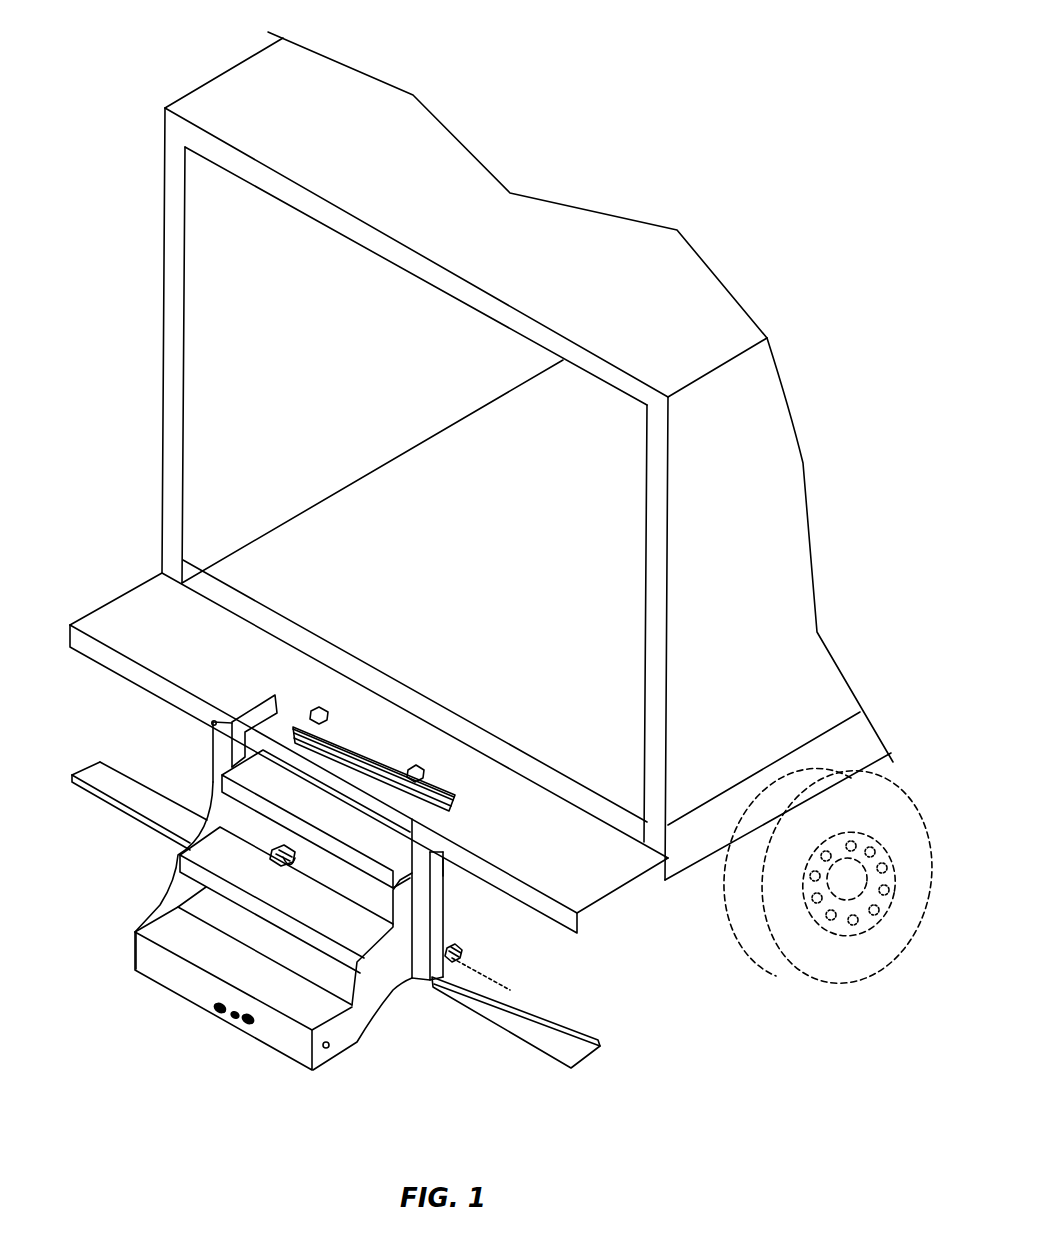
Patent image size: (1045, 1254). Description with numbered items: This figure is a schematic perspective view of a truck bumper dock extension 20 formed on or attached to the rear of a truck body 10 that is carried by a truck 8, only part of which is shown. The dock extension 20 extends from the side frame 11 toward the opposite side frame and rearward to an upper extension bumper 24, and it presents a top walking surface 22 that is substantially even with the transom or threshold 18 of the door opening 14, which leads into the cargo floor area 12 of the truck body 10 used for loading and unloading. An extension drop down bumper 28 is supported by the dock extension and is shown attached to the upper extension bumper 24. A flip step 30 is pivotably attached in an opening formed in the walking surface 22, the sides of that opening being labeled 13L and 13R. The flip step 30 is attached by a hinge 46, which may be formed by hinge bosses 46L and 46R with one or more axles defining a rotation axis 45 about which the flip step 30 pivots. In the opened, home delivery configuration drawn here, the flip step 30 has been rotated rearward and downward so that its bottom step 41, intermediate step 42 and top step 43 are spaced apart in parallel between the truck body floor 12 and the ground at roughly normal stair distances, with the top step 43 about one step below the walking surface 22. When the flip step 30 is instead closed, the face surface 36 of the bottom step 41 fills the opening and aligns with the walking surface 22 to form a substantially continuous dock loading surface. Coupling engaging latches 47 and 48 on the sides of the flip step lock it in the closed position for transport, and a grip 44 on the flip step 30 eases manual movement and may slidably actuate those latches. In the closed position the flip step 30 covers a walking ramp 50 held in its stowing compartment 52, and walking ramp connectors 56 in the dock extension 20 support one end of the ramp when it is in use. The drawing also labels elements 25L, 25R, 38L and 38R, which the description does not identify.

The truck 8 is at (688, 929).
The truck body 10 is at (164, 328).
The side frame 11 is at (779, 609).
The floor area 12 is at (372, 510).
The left side of the opening 13L is at (267, 737).
The right side of the opening 13R is at (457, 893).
The door opening 14 is at (212, 402).
The transom 18 is at (250, 603).
The truck bumper dock extension 20 is at (343, 740).
The top walking surface 22 is at (143, 592).
The upper extension bumper 24 is at (133, 672).
The left support arm 25L is at (222, 750).
The right support arm 25R is at (420, 987).
The extension drop down bumper 28 is at (373, 751).
The flip step 30 is at (305, 927).
The face surface 36 is at (165, 980).
The left side plate 38L is at (178, 895).
The right side plate 38R is at (372, 1015).
The bottom step 41 is at (243, 988).
The intermediate step 42 is at (286, 900).
The top step 43 is at (316, 819).
The grip 44 is at (228, 1032).
The rotation axis 45 is at (163, 797).
The hinge 46 is at (270, 856).
The hinge boss 46L is at (298, 862).
The hinge boss 46R is at (462, 958).
The coupling engaging latch 47 is at (327, 1050).
The coupling engaging latch 48 is at (212, 724).
The walking ramp 50 is at (337, 752).
The stowing compartment 52 is at (300, 728).
The walking ramp connectors 56 is at (424, 775).